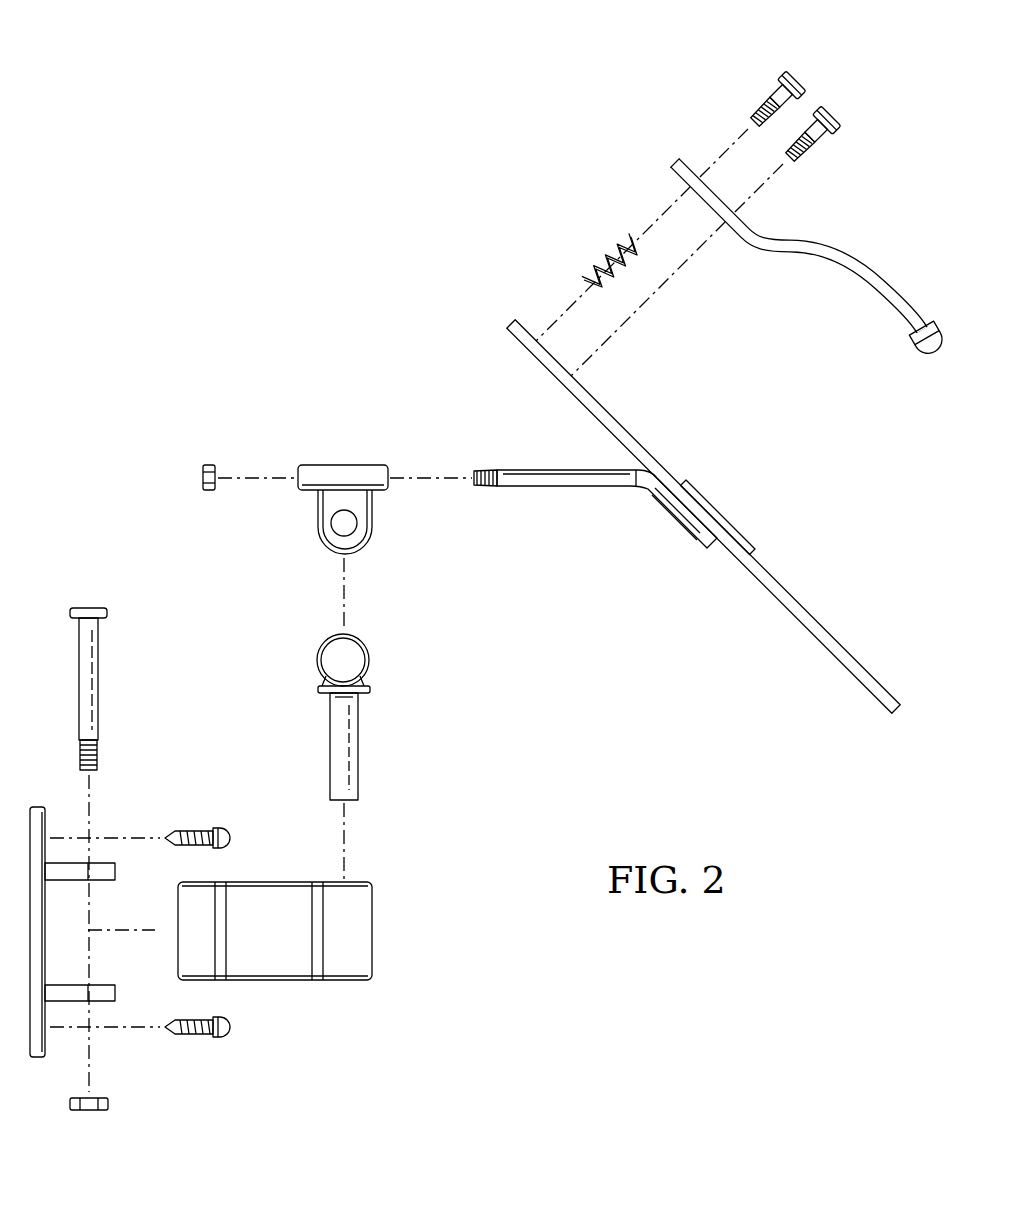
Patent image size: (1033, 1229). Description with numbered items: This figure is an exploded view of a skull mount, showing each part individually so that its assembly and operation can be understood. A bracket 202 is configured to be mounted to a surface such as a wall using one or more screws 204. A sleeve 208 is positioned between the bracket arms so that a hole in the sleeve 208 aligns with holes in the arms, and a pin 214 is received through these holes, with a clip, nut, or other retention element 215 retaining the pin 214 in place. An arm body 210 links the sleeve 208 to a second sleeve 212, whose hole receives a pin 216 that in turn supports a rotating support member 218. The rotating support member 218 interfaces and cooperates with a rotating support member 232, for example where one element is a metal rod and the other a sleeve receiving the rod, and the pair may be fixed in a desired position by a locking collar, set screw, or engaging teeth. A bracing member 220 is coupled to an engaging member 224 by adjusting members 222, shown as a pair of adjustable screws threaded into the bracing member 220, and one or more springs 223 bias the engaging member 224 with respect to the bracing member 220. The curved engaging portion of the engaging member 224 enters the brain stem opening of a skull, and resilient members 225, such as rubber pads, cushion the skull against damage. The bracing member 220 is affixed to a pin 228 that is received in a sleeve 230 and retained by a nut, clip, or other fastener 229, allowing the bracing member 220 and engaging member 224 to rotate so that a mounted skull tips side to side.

The bracket 202 is at (43, 815).
The screws 204 is at (212, 828).
The sleeve 208 is at (185, 940).
The arm body 210 is at (270, 983).
The sleeve 212 is at (365, 940).
The pin 214 is at (100, 680).
The retention element 215 is at (82, 1112).
The pin 216 is at (360, 742).
The rotating support member 218 is at (372, 657).
The bracing member 220 is at (795, 628).
The adjusting members 222 is at (828, 48).
The springs 223 is at (596, 255).
The engaging member 224 is at (855, 248).
The resilient members 225 is at (912, 340).
The pin 228 is at (565, 490).
The fastener 229 is at (200, 475).
The sleeve 230 is at (325, 462).
The rotating support member 232 is at (320, 540).